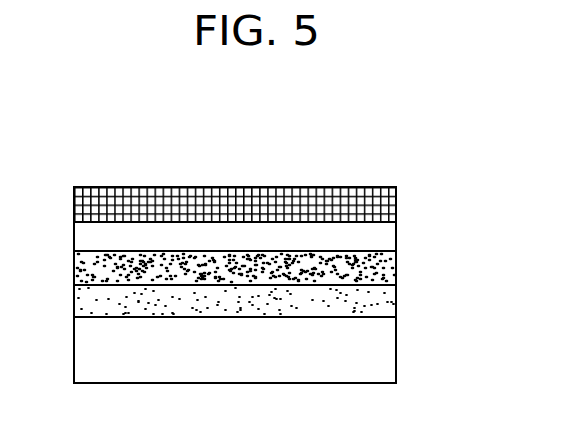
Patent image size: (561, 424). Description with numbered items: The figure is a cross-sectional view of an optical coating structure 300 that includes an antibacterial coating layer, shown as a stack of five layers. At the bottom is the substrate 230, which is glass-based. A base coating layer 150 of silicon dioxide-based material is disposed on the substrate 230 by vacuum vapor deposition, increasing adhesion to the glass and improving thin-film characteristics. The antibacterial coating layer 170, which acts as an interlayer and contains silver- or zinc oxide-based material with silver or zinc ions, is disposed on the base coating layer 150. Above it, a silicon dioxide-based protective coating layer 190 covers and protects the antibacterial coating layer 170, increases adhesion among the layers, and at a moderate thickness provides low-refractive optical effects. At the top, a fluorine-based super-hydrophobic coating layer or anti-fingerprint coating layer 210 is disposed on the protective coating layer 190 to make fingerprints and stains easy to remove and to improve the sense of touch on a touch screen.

The optical coating structure 300 is at (263, 144).
The super-hydrophobic coating layer or anti-fingerprint coating layer 210 is at (396, 201).
The protective coating layer 190 is at (390, 237).
The antibacterial coating layer 170 is at (396, 265).
The base coating layer 150 is at (393, 302).
The substrate 230 is at (392, 348).